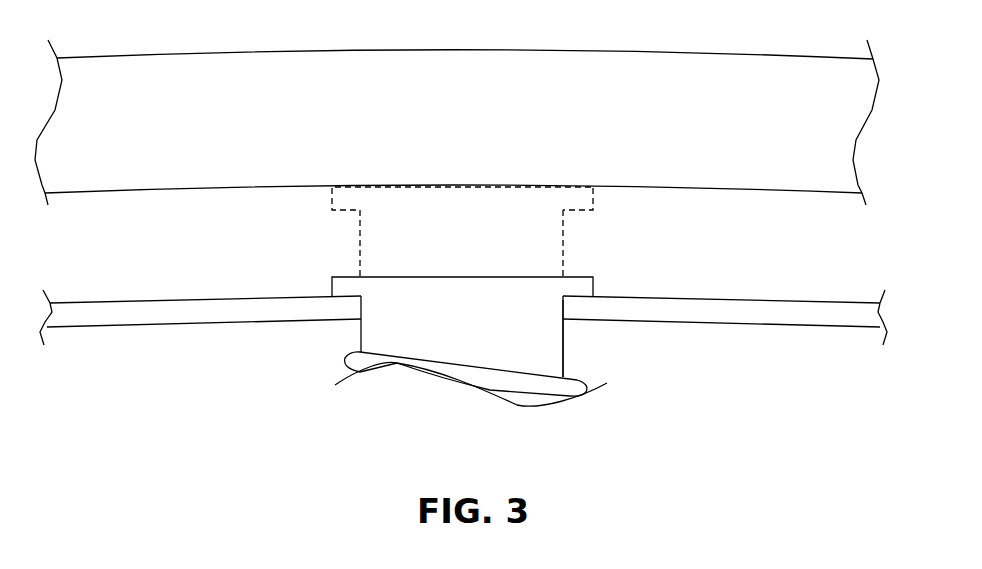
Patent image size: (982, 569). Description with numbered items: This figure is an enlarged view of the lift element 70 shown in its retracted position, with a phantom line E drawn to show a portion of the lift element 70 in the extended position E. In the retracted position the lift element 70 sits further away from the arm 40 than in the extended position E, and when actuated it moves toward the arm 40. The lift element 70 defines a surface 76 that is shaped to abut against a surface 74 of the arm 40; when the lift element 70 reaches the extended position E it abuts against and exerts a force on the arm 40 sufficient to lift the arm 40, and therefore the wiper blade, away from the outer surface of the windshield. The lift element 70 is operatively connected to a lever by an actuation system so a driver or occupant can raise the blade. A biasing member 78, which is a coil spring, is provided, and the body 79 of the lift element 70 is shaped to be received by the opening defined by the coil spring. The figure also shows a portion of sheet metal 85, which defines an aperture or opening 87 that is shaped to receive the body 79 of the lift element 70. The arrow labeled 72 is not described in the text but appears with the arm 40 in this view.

The arm 40 is at (608, 72).
The aperture 72 is at (637, 201).
The surface of the arm 74 is at (372, 187).
The surface 76 is at (478, 183).
The body 79 is at (439, 333).
The opening 87 is at (563, 310).
The sheet metal 85 is at (790, 315).
The biasing member 78 is at (533, 382).
The lift element 70 is at (605, 356).
The extended position E is at (563, 230).